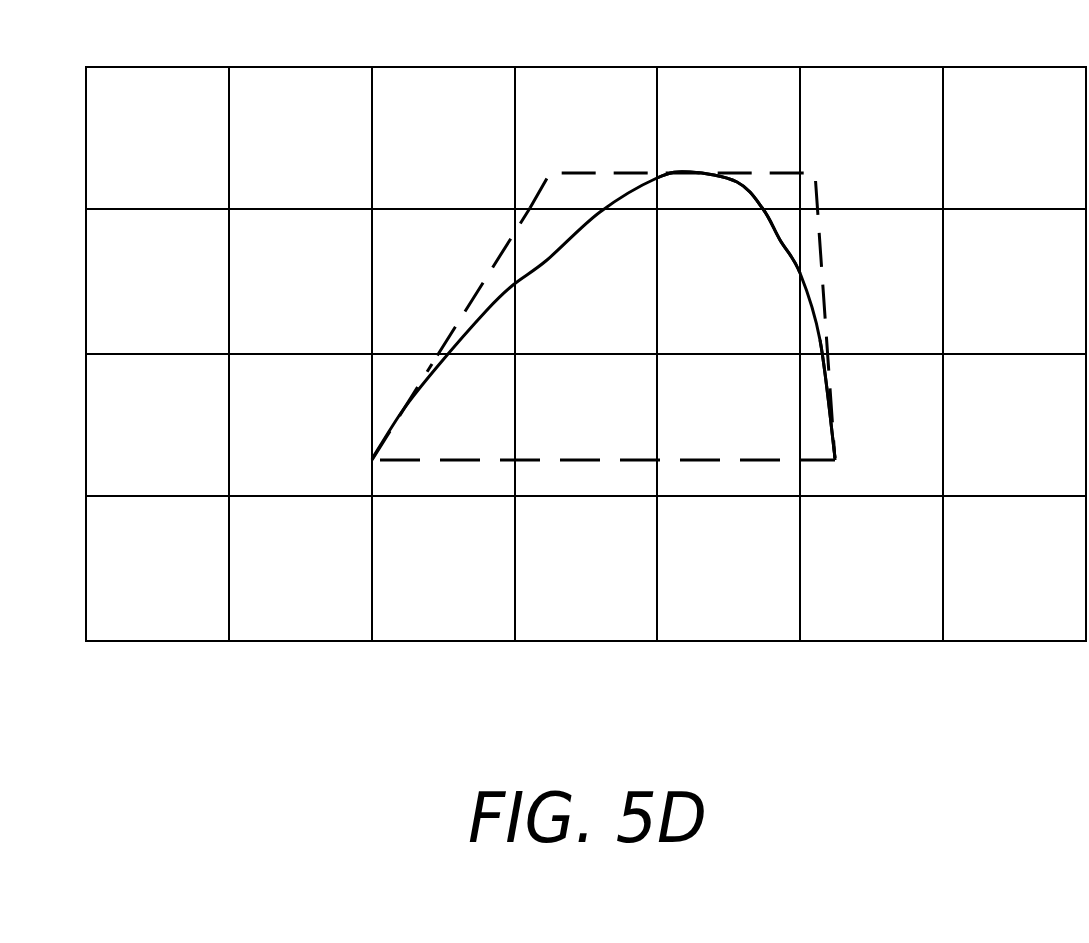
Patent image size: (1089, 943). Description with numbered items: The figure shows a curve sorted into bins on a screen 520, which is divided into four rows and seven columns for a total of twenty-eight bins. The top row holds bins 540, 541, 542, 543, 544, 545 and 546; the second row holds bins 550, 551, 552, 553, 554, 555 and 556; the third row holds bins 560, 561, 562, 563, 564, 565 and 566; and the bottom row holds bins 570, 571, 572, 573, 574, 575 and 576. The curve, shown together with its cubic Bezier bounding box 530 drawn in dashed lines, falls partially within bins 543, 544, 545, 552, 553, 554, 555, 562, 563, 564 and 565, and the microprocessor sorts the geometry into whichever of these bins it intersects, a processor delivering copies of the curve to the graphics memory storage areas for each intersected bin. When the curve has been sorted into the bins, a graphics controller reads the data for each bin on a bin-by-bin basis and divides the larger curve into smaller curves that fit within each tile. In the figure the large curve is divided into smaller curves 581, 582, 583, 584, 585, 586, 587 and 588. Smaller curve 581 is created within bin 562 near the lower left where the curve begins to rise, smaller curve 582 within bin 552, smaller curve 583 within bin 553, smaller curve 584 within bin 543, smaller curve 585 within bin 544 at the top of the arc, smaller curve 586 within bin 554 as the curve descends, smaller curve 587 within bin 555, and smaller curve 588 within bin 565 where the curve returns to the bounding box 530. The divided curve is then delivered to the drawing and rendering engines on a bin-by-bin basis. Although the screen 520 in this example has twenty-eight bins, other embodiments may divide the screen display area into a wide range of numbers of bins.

The screen 520 is at (360, 687).
The cubic Bezier bounding box 530 is at (603, 458).
The bin 540 is at (157, 138).
The bin 541 is at (300, 138).
The bin 542 is at (443, 138).
The bin 543 is at (586, 138).
The bin 544 is at (728, 138).
The bin 545 is at (871, 138).
The bin 546 is at (1014, 138).
The bin 550 is at (157, 281).
The bin 551 is at (300, 281).
The bin 552 is at (443, 281).
The bin 553 is at (586, 281).
The bin 554 is at (728, 281).
The bin 555 is at (871, 281).
The bin 556 is at (1014, 281).
The bin 560 is at (157, 425).
The bin 561 is at (300, 425).
The bin 562 is at (443, 425).
The bin 563 is at (586, 425).
The bin 564 is at (728, 425).
The bin 565 is at (871, 425).
The bin 566 is at (1014, 425).
The bin 570 is at (157, 568).
The bin 571 is at (300, 568).
The bin 572 is at (443, 568).
The bin 573 is at (586, 568).
The bin 574 is at (728, 568).
The bin 575 is at (871, 568).
The bin 576 is at (1014, 568).
The smaller curve 581 is at (422, 397).
The smaller curve 582 is at (487, 313).
The smaller curve 583 is at (552, 250).
The smaller curve 584 is at (633, 190).
The smaller curve 585 is at (737, 182).
The smaller curve 586 is at (780, 240).
The smaller curve 587 is at (813, 317).
The smaller curve 588 is at (835, 422).